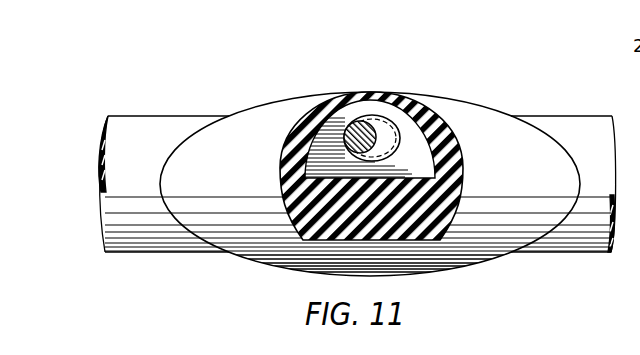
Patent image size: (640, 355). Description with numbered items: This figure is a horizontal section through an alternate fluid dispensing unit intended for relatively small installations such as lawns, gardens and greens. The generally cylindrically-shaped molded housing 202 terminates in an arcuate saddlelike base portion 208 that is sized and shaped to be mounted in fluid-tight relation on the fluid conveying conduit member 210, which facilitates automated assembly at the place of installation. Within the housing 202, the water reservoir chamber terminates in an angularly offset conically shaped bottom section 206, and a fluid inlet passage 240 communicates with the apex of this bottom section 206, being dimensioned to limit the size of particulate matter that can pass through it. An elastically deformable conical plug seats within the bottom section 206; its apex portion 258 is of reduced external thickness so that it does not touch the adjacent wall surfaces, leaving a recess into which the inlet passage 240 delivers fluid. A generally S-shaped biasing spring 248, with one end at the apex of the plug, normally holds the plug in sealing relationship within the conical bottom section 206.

The housing 202 is at (432, 118).
The conically shaped bottom section 206 is at (413, 165).
The saddlelike base portion 208 is at (512, 123).
The fluid conveying conduit member 210 is at (165, 246).
The fluid inlet passage 240 is at (386, 104).
The biasing spring 248 is at (369, 113).
The apex portion 258 is at (347, 132).